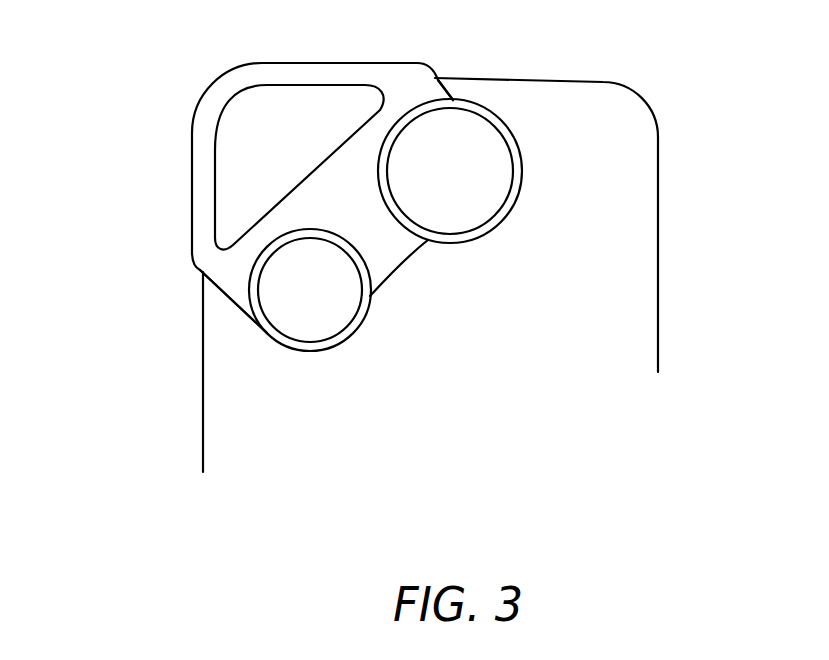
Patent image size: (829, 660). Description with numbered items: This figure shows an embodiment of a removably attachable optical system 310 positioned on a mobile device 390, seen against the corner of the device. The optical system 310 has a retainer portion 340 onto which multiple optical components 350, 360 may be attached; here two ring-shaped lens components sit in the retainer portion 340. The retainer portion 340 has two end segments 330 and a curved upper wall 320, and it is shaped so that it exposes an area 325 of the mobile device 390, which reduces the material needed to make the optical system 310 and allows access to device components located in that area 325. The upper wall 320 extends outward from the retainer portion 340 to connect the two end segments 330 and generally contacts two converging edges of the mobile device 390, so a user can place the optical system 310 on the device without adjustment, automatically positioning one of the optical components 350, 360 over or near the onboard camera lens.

The optical system 310 is at (176, 230).
The curved upper wall 320 is at (238, 85).
The exposed area 325 is at (258, 155).
The end segments 330 is at (422, 88).
The retainer portion 340 is at (392, 245).
The optical component 350 is at (325, 327).
The optical component 360 is at (473, 188).
The mobile device 390 is at (627, 322).